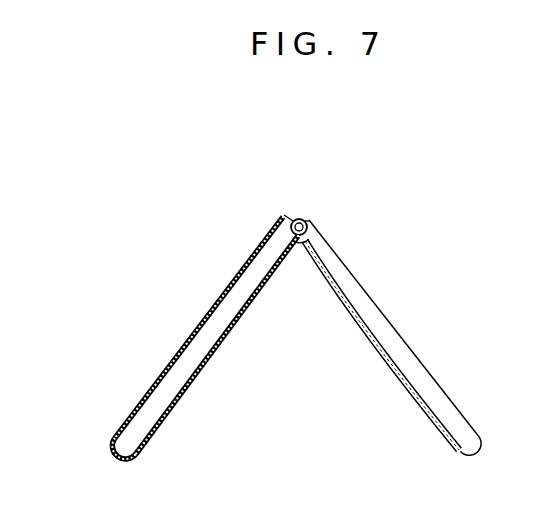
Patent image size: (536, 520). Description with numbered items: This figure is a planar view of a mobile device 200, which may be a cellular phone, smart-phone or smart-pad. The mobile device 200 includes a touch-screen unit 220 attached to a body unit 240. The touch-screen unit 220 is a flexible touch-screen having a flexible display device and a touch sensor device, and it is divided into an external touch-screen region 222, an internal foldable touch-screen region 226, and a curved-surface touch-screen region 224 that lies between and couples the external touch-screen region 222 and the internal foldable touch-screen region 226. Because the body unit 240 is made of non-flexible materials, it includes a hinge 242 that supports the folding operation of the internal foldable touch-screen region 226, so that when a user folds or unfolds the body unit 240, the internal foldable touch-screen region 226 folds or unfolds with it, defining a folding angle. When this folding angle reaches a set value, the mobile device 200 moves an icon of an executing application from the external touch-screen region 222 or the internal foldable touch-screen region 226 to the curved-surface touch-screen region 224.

The mobile device 200 is at (316, 110).
The touch-screen unit 220 is at (437, 436).
The external touch-screen region 222 is at (214, 304).
The curved-surface touch-screen region 224 is at (109, 452).
The internal foldable touch-screen region 226 is at (364, 342).
The body unit 240 is at (430, 388).
The hinge 242 is at (302, 218).